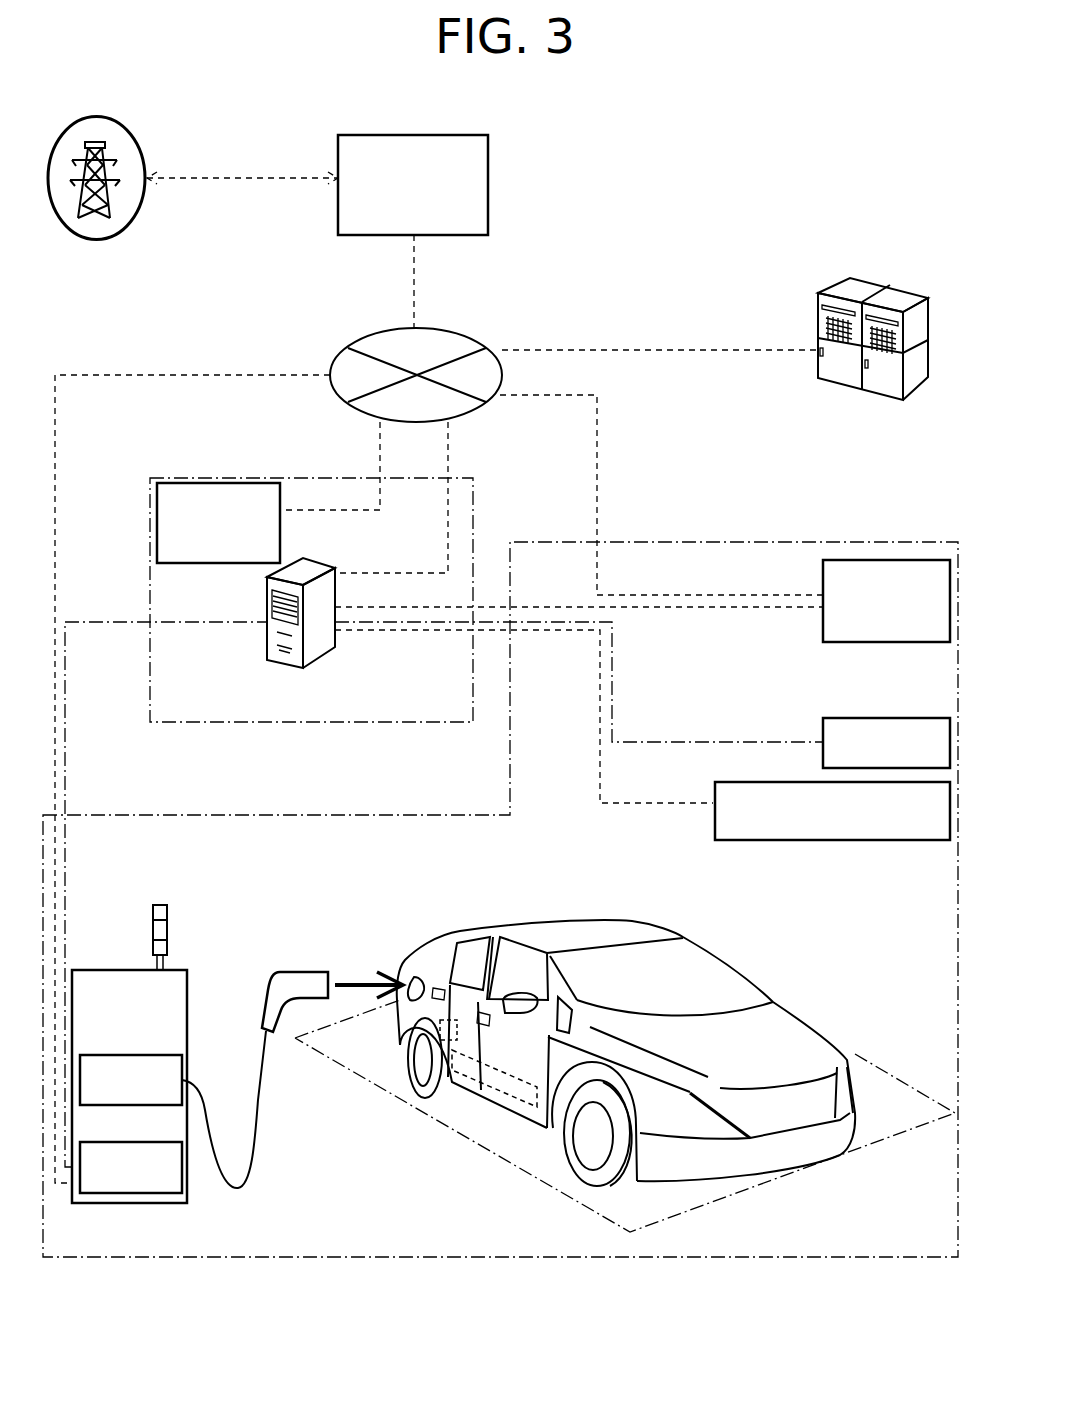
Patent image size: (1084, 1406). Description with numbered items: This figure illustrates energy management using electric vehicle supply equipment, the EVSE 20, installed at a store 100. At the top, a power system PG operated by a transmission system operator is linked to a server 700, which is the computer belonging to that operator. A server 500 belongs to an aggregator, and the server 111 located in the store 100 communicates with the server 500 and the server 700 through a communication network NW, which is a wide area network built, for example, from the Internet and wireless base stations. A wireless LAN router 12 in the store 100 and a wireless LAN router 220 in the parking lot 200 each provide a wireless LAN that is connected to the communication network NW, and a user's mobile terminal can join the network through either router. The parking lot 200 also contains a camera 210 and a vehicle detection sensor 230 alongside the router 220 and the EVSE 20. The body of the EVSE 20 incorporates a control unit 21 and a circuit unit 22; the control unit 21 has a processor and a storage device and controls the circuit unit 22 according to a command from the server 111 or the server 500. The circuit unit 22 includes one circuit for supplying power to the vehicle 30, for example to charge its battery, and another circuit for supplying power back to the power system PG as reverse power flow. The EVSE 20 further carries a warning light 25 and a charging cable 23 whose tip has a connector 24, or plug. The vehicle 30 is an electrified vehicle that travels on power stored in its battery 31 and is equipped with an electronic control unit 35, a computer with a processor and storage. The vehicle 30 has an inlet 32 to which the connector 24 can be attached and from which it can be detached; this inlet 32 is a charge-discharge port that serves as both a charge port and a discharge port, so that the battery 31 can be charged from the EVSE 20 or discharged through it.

The power system PG is at (113, 120).
The server 700 is at (453, 133).
The communication network NW is at (460, 335).
The server 500 is at (878, 283).
The store 100 is at (217, 478).
The wireless LAN router 12 is at (157, 527).
The server 111 is at (330, 567).
The parking lot 200 is at (882, 542).
The wireless LAN router 220 is at (850, 642).
The camera 210 is at (883, 718).
The vehicle detection sensor 230 is at (770, 782).
The EVSE 20 is at (135, 970).
The circuit unit 22 is at (155, 1055).
The control unit 21 is at (160, 1132).
The warning light 25 is at (163, 905).
The connector 24 is at (298, 972).
The charging cable 23 is at (257, 1107).
The vehicle 30 is at (648, 923).
The inlet 32 is at (412, 980).
The electronic control unit 35 is at (438, 1027).
The battery 31 is at (505, 1085).